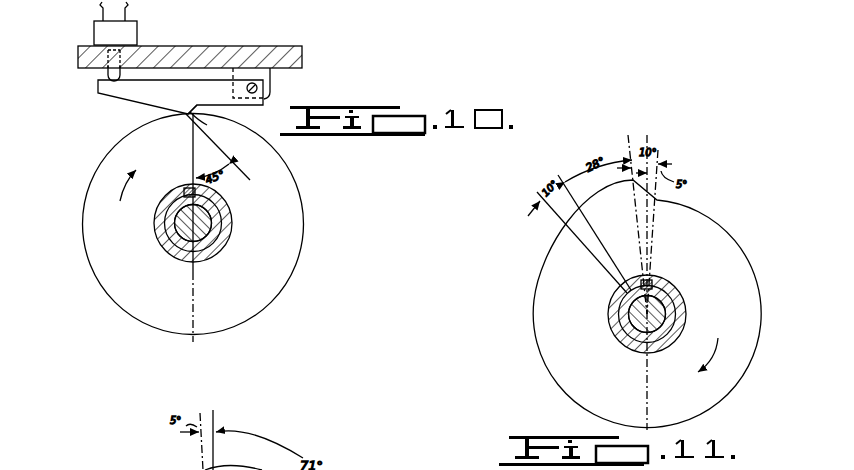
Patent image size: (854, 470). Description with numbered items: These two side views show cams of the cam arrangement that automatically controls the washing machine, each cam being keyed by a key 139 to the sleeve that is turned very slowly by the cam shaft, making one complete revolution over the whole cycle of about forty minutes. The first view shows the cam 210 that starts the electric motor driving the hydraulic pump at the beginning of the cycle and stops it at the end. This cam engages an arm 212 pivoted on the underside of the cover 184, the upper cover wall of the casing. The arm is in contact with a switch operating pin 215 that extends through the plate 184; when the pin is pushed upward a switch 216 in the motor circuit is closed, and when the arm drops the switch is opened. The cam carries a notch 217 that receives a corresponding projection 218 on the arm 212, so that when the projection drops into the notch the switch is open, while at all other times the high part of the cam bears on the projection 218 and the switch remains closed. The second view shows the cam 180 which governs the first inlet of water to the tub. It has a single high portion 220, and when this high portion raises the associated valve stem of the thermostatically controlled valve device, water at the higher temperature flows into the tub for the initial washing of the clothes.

In FIG. 10, the cover 184 is at (259, 51).
In FIG. 10, the switch 216 is at (132, 30).
In FIG. 10, the switch operating pin 215 is at (97, 79).
In FIG. 10, the arm 212 is at (142, 99).
In FIG. 10, the notch 217 is at (183, 118).
In FIG. 10, the projection 218 is at (207, 125).
In FIG. 10, the cam 210 is at (301, 197).
In FIG. 10, the key 139 is at (183, 193).
In FIG. 11, the key 139 is at (652, 283).
In FIG. 11, the cam 180 is at (549, 360).
In FIG. 11, the high portion 220 is at (563, 222).